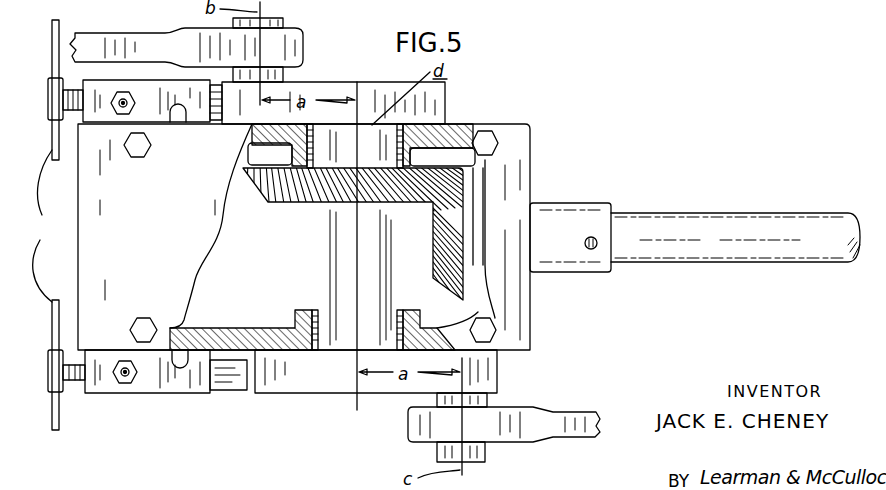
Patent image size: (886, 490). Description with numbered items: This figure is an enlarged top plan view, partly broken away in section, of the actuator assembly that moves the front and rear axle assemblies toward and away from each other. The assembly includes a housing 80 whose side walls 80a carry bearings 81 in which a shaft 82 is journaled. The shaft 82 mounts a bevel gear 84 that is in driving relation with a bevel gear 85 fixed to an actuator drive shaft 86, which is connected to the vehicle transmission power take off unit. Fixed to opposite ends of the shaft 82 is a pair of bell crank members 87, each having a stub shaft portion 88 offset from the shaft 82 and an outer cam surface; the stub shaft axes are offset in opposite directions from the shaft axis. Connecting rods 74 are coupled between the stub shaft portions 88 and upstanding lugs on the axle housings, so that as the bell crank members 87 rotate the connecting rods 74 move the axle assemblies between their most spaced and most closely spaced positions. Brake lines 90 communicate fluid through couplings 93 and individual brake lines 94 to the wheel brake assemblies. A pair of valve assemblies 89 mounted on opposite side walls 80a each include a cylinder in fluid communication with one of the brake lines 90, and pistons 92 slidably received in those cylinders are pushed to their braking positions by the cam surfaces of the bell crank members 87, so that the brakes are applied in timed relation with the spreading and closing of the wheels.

The connecting rod 74 is at (118, 18).
The housing 80 is at (515, 143).
The side wall 80a is at (473, 125).
The bearing 81 is at (400, 130).
The shaft 82 is at (330, 235).
The bevel gear 84 is at (263, 197).
The bevel gear 85 is at (463, 197).
The actuator drive shaft 86 is at (588, 214).
The bell crank member 87 is at (402, 68).
The stub shaft portion 88 is at (290, 22).
The valve assembly 89 is at (155, 112).
The brake line 90 is at (113, 113).
The piston 92 is at (215, 83).
The coupling 93 is at (55, 98).
The individual brake line 94 is at (49, 226).